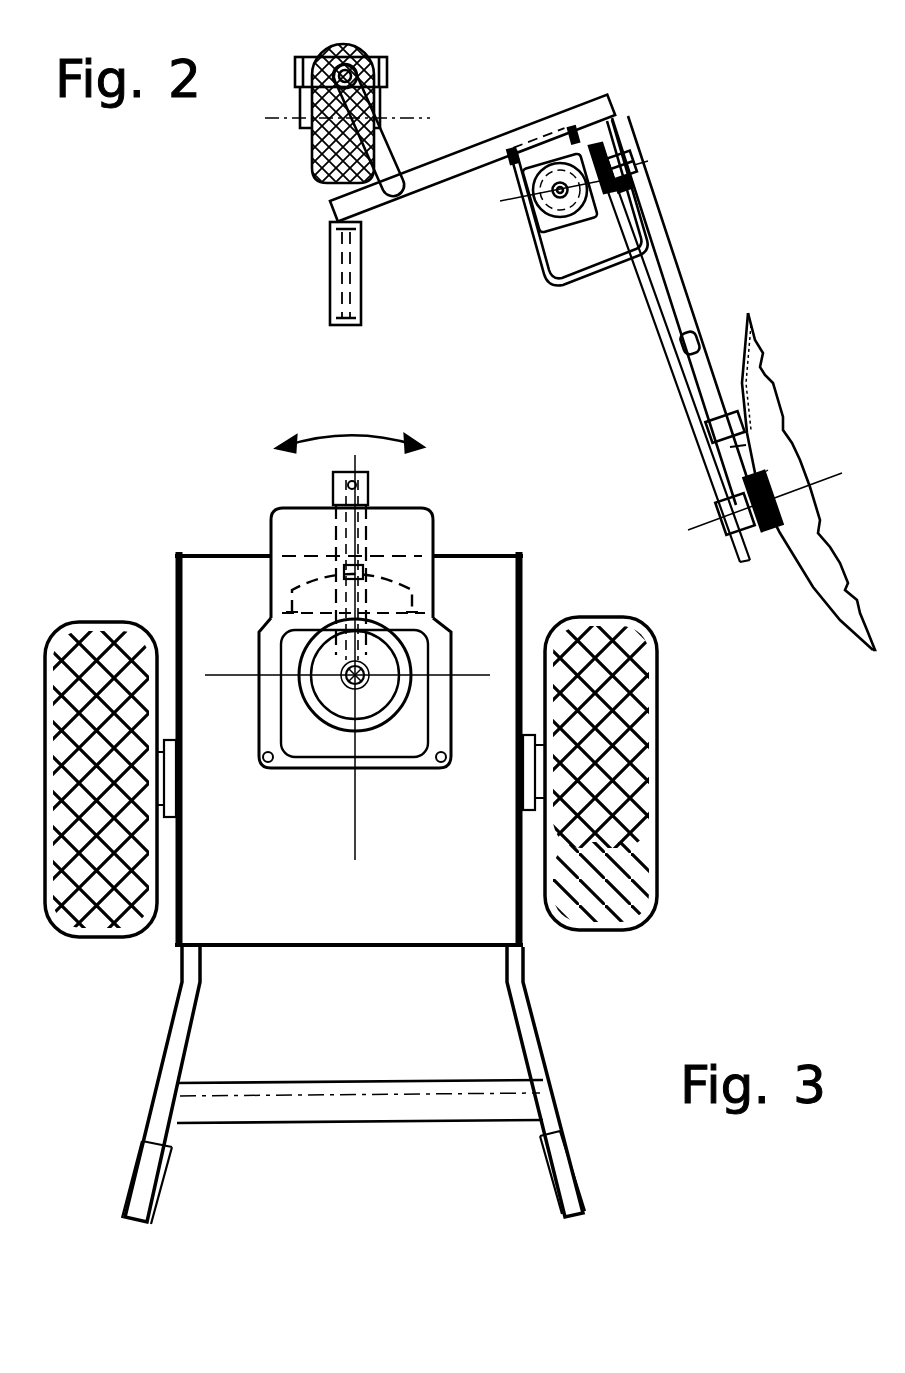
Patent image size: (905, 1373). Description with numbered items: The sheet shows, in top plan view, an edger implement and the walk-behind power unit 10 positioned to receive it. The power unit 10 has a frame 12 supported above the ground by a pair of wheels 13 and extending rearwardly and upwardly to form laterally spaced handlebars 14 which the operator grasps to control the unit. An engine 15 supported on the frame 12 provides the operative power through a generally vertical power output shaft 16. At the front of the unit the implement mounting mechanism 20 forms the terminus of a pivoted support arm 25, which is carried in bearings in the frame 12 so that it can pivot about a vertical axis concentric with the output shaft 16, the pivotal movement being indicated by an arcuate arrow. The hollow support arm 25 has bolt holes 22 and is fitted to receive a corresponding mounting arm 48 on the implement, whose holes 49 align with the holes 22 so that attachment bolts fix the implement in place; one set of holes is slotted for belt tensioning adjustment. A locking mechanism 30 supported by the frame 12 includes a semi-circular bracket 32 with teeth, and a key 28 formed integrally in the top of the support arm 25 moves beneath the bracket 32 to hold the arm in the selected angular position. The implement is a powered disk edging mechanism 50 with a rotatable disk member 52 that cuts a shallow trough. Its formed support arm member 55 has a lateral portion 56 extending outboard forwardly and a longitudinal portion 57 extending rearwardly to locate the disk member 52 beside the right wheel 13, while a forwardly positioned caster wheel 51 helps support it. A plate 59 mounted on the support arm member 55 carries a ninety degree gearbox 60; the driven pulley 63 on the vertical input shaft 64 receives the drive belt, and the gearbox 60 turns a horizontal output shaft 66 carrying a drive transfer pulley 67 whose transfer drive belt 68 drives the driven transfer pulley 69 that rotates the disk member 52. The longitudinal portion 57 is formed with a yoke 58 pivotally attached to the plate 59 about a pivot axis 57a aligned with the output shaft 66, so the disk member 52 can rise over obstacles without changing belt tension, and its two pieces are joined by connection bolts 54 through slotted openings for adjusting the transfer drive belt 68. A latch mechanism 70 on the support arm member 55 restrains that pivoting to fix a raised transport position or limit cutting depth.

In FIG. 3, the walk-behind power unit 10 is at (165, 492).
In FIG. 3, the frame 12 is at (522, 948).
In FIG. 3, the wheels 13 is at (110, 622).
In FIG. 3, the handlebars 14 is at (165, 1160).
In FIG. 3, the engine 15 is at (360, 690).
In FIG. 3, the power output shaft 16 is at (368, 708).
In FIG. 3, the implement mounting mechanism 20 is at (428, 496).
In FIG. 3, the bolt holes 22 is at (370, 482).
In FIG. 3, the support arm 25 is at (333, 490).
In FIG. 3, the key 28 is at (372, 572).
In FIG. 3, the locking mechanism 30 is at (305, 575).
In FIG. 3, the semi-circular bracket 32 is at (410, 595).
In FIG. 2, the mounting arm 48 is at (332, 298).
In FIG. 2, the holes 49 is at (332, 236).
In FIG. 2, the powered disk edging mechanism 50 is at (703, 137).
In FIG. 2, the caster wheel 51 is at (318, 150).
In FIG. 2, the disk member 52 is at (810, 590).
In FIG. 2, the connection bolts 54 is at (764, 377).
In FIG. 2, the support arm member 55 is at (605, 112).
In FIG. 2, the lateral portion 56 is at (503, 135).
In FIG. 2, the longitudinal portion 57 is at (670, 297).
In FIG. 2, the pivot axis 57a is at (528, 215).
In FIG. 2, the yoke 58 is at (648, 226).
In FIG. 2, the plate 59 is at (528, 165).
In FIG. 2, the gearbox 60 is at (568, 222).
In FIG. 2, the driven pulley 63 is at (558, 162).
In FIG. 2, the vertical input shaft 64 is at (520, 205).
In FIG. 2, the output shaft 66 is at (600, 125).
In FIG. 2, the drive transfer pulley 67 is at (637, 197).
In FIG. 2, the transfer drive belt 68 is at (685, 345).
In FIG. 2, the driven transfer pulley 69 is at (750, 545).
In FIG. 2, the latch mechanism 70 is at (683, 172).